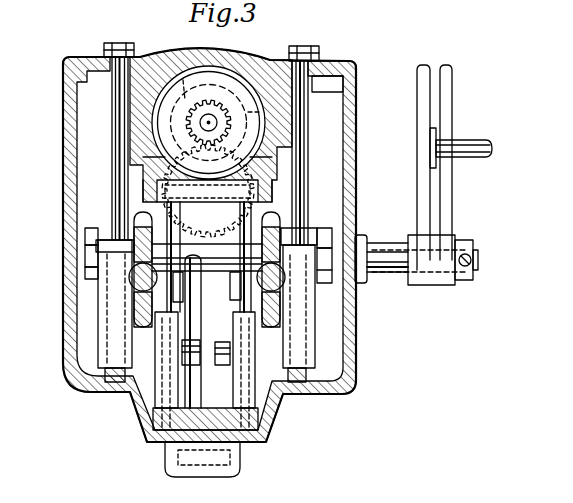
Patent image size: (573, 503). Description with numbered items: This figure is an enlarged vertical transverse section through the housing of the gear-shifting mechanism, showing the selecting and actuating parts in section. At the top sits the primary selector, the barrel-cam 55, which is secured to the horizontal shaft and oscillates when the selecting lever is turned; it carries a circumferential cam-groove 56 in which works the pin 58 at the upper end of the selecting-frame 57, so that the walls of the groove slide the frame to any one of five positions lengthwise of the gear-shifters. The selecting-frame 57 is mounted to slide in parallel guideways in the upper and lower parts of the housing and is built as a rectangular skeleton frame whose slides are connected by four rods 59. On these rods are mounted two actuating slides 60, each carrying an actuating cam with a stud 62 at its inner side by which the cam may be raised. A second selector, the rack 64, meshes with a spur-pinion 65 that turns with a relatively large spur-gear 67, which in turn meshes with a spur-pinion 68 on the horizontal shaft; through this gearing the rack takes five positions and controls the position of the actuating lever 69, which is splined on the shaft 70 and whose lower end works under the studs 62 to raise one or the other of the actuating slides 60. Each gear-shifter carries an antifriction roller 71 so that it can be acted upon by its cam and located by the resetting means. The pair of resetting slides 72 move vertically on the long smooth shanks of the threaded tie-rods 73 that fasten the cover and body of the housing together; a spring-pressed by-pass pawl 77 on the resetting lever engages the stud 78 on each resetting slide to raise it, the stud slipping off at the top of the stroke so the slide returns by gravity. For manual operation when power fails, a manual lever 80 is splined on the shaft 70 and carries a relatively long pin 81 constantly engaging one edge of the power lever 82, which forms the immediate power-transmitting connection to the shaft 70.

The barrel-cam 55 is at (238, 83).
The cam-groove 56 is at (300, 110).
The selecting-frame 57 is at (230, 190).
The pin 58 is at (168, 172).
The rods 59 is at (133, 248).
The actuating slide 60 is at (167, 392).
The stud 62 is at (190, 360).
The rack 64 is at (258, 212).
The spur-pinion 65 is at (138, 182).
The spur-gear 67 is at (207, 269).
The spur-pinion 68 is at (176, 63).
The actuating lever 69 is at (192, 398).
The shaft 70 is at (397, 268).
The antifriction roller 71 is at (172, 280).
The resetting slide 72 is at (112, 338).
The tie-rod 73 is at (115, 118).
The by-pass pawl 77 is at (87, 273).
The stud 78 is at (87, 238).
The manual lever 80 is at (422, 142).
The pin 81 is at (477, 147).
The power lever 82 is at (447, 187).